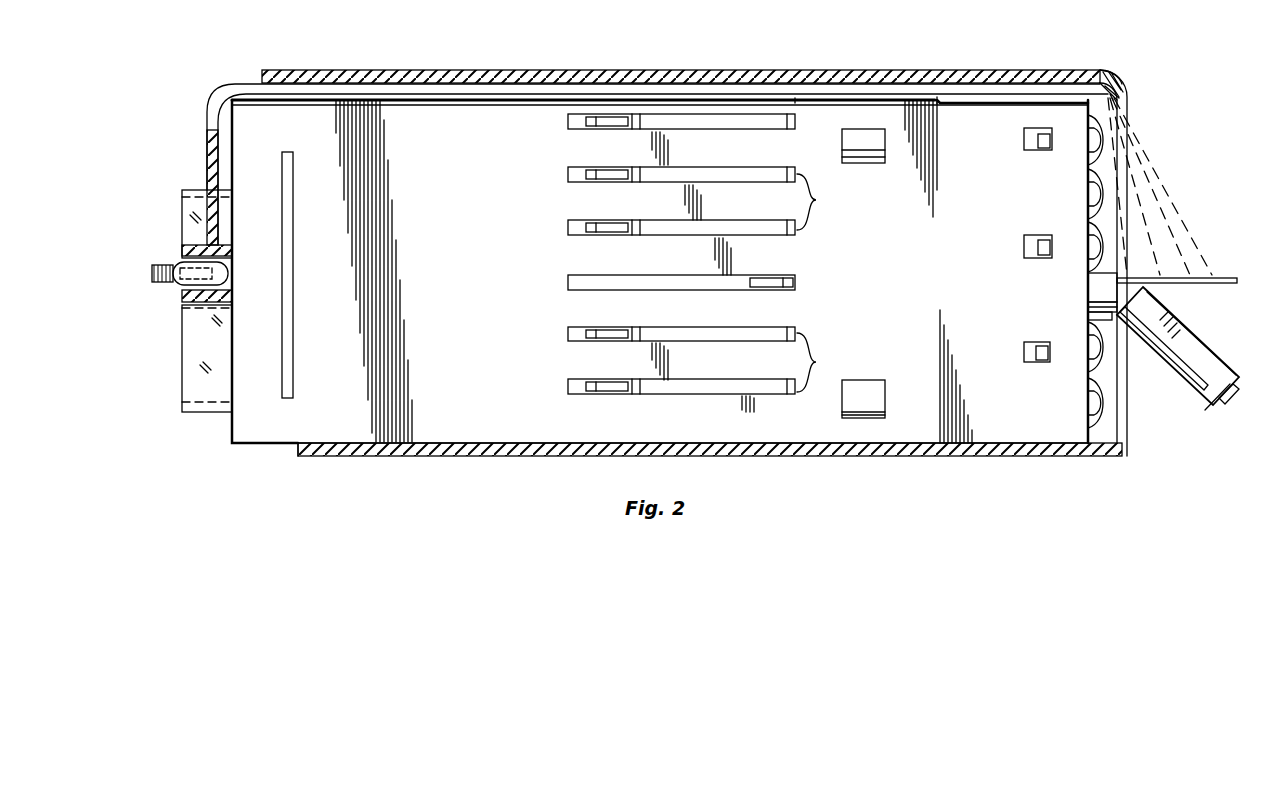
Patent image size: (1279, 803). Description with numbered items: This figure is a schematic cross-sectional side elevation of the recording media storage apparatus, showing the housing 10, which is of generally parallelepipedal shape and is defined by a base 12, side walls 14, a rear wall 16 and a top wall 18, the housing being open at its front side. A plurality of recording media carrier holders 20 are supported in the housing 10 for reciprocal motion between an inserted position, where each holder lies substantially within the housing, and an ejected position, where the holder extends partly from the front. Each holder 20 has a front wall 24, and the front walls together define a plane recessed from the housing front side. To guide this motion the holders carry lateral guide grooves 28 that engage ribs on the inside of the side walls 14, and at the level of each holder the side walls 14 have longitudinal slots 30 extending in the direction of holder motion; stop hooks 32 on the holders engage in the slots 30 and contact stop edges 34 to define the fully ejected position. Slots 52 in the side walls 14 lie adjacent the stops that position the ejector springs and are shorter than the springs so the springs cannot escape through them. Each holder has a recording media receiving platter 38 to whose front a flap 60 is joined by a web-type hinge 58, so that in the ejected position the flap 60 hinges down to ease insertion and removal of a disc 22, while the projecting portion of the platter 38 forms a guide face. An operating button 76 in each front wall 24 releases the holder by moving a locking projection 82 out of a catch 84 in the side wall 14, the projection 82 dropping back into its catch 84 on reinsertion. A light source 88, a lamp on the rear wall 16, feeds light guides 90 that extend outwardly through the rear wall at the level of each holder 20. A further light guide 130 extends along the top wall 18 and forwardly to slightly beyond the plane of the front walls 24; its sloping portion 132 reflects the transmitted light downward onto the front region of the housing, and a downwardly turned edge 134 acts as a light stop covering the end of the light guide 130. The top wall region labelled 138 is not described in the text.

The housing 10 is at (282, 447).
The base 12 is at (372, 456).
The side walls 14 is at (495, 418).
The rear wall 16 is at (231, 387).
The top wall 18 is at (553, 99).
The recording media carrier holders 20 is at (1123, 195).
The disc 22 is at (1216, 277).
The front wall 24 is at (1215, 408).
The lateral guide grooves 28 is at (1178, 357).
The longitudinal slots 30 is at (738, 122).
The stop hooks 32 is at (601, 177).
The stop edges 34 is at (819, 283).
The receiving platter 38 is at (1088, 284).
The slots 52 is at (288, 272).
The web-type hinge 58 is at (1100, 312).
The flap 60 is at (1205, 350).
The operating button 76 is at (1105, 137).
The locking projections 82 is at (1044, 147).
The catches 84 is at (1024, 140).
The light source 88 is at (164, 282).
The light guides 90 is at (190, 243).
The further light guide 130 is at (206, 132).
The sloping portion 132 is at (1110, 72).
The downwardly turned edge 134 is at (768, 83).
The upper wall 138 is at (484, 99).